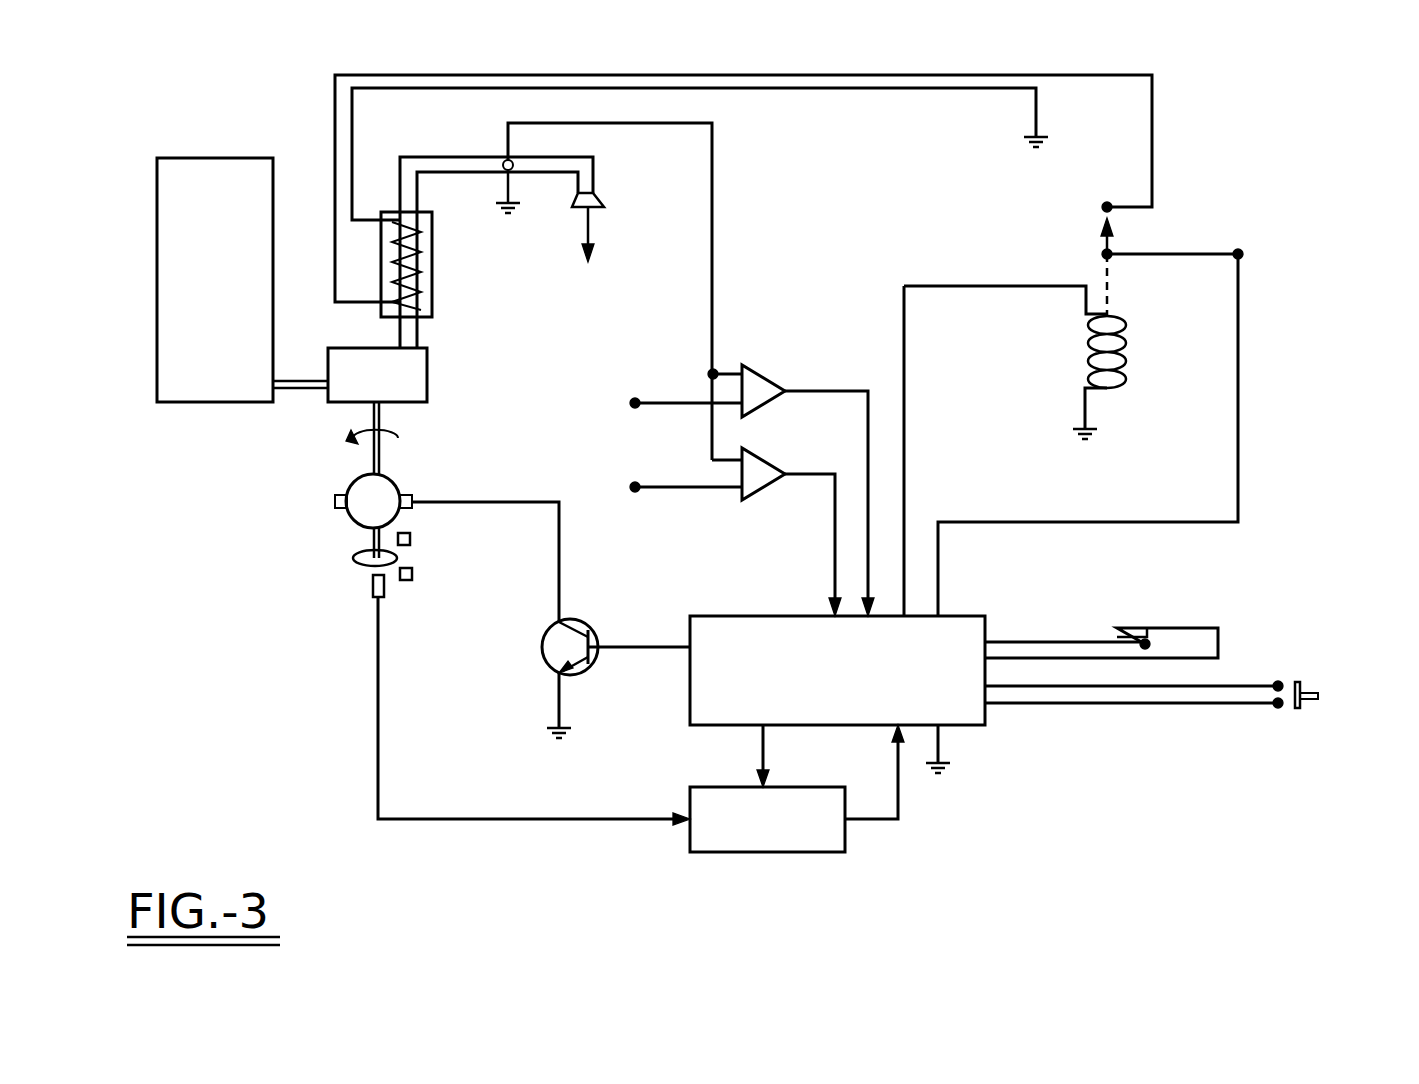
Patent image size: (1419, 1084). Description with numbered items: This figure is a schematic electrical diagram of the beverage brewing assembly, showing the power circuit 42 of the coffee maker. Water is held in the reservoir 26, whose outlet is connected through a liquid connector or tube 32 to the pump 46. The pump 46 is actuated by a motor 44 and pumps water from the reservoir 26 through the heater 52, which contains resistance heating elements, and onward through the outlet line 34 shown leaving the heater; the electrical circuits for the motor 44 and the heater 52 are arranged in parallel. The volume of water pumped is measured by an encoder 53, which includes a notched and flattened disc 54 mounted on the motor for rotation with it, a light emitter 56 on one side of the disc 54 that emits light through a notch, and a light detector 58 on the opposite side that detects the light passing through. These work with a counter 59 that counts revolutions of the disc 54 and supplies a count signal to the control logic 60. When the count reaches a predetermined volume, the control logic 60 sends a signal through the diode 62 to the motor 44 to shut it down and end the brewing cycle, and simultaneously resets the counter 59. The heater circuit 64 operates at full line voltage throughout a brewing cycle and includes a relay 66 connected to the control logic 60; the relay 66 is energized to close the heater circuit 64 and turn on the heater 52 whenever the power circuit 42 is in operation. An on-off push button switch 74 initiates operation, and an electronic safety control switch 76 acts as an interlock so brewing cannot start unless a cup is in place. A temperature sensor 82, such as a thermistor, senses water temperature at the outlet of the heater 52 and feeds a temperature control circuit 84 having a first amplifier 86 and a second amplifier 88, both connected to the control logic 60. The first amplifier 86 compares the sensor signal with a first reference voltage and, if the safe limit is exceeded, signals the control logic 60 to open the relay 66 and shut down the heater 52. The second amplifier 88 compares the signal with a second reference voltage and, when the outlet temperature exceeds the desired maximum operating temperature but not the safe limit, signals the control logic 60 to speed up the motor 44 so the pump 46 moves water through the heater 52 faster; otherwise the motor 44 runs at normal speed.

The reservoir 26 is at (157, 355).
The tube 32 is at (308, 392).
The delivery tube 34 is at (463, 157).
The power circuit 42 is at (230, 638).
The motor 44 is at (350, 486).
The pump 46 is at (427, 357).
The heater 52 is at (432, 268).
The encoder 53 is at (317, 562).
The disc 54 is at (358, 565).
The light emitter 56 is at (410, 540).
The light detector 58 is at (412, 574).
The counter 59 is at (770, 852).
The control logic 60 is at (728, 616).
The diode 62 is at (542, 650).
The heater circuit 64 is at (1122, 377).
The relay 66 is at (1124, 355).
The on-off push button switch 74 is at (1288, 716).
The electronic safety control switch 76 is at (1108, 624).
The temperature sensor 82 is at (503, 168).
The temperature control circuit 84 is at (700, 430).
The first amplifier 86 is at (766, 400).
The second amplifier 88 is at (766, 500).